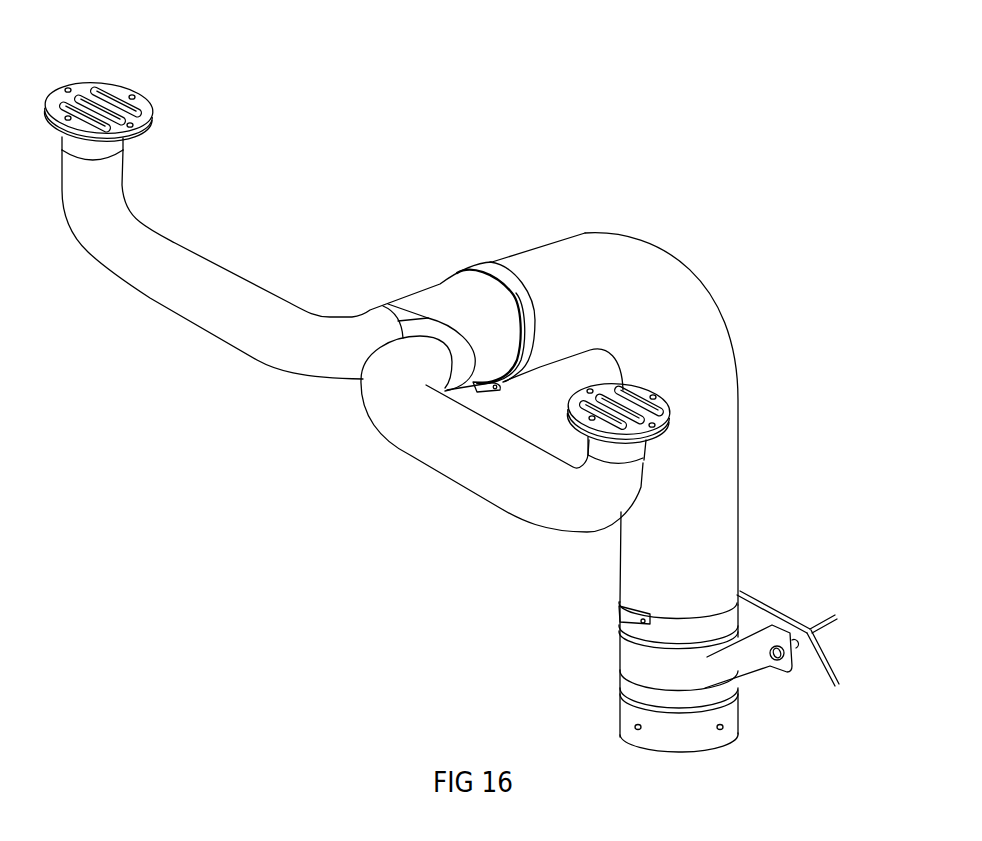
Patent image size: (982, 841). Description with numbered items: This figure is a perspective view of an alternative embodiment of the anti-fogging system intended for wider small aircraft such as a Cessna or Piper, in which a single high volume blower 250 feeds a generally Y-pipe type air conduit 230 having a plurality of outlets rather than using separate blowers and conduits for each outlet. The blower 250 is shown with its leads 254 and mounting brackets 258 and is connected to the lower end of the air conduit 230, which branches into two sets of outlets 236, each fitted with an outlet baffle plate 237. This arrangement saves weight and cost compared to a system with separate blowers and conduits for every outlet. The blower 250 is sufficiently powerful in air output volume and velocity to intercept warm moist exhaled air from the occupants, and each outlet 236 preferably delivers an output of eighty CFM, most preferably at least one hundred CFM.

The air conduit 230 is at (608, 232).
The outlets 236 is at (107, 147).
The outlet baffle plates 237 is at (104, 83).
The blower 250 is at (643, 663).
The leads 254 is at (832, 674).
The mounting brackets 258 is at (783, 672).